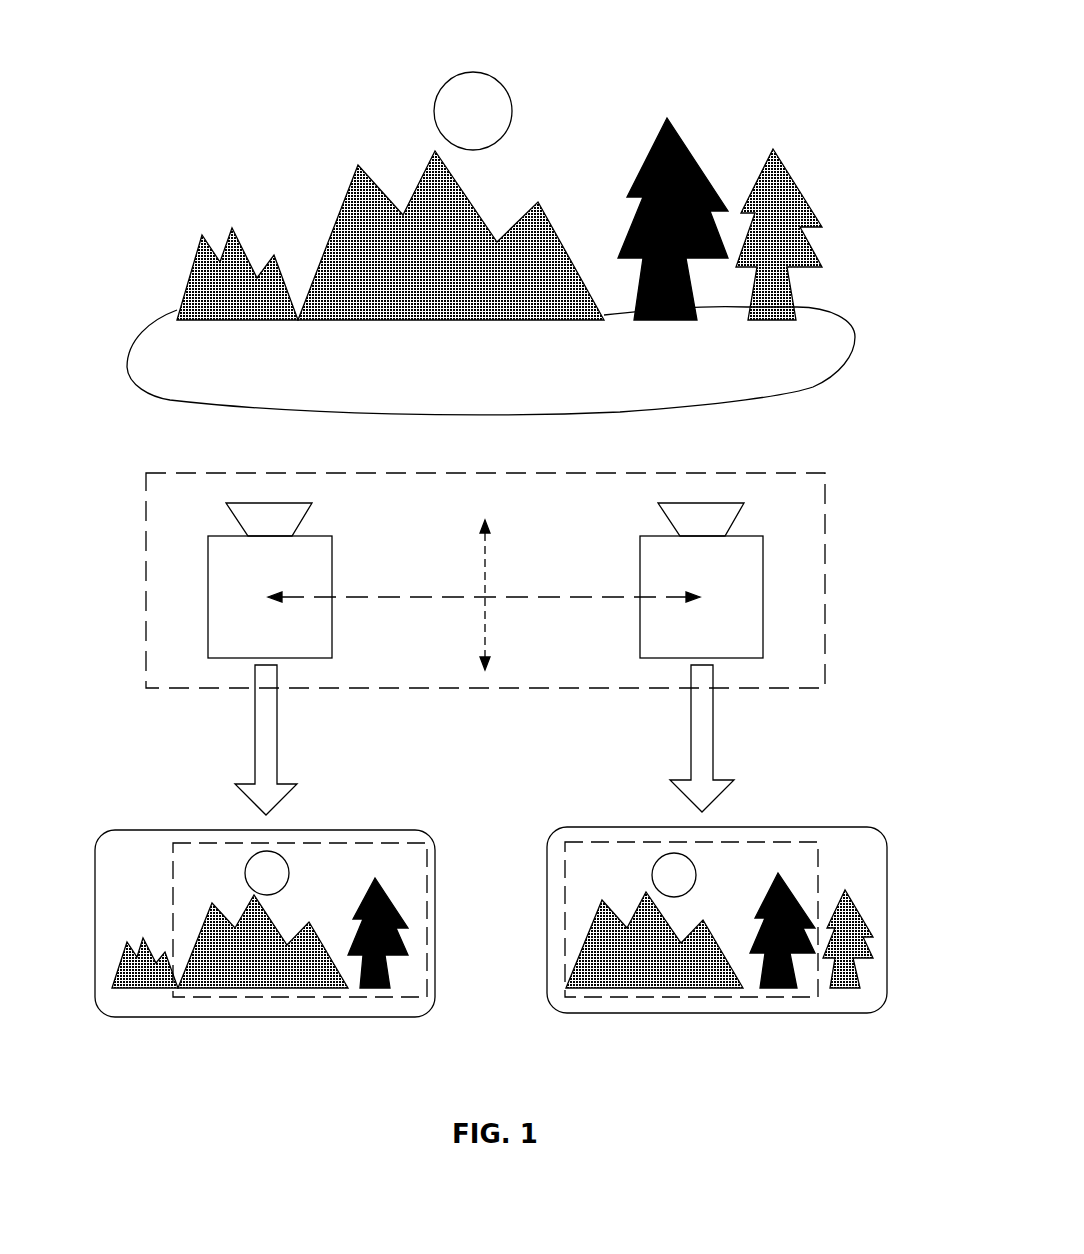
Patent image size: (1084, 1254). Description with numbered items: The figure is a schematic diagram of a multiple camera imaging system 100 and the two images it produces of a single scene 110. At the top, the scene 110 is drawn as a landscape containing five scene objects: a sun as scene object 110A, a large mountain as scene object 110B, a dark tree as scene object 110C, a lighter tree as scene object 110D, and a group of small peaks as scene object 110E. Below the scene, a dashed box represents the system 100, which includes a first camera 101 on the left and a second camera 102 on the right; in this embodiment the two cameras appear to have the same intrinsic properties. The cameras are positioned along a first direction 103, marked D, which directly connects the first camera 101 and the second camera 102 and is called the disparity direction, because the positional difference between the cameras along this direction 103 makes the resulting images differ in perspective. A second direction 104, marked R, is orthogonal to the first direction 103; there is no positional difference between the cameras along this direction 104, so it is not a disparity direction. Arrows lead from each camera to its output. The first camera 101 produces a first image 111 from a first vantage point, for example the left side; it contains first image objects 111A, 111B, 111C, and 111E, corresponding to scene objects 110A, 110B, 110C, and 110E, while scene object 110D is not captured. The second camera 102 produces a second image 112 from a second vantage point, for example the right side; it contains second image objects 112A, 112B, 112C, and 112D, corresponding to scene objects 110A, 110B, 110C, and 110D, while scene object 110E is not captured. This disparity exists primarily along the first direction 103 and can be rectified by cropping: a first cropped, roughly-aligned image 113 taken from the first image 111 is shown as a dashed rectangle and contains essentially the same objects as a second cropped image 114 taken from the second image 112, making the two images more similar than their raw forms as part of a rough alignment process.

The multiple camera imaging system 100 is at (825, 493).
The first camera 101 is at (312, 640).
The second camera 102 is at (745, 640).
The first direction 103 is at (530, 597).
The second direction 104 is at (485, 618).
The scene 110 is at (764, 109).
The scene object 110A is at (436, 93).
The scene object 110B is at (413, 183).
The scene object 110C is at (650, 147).
The scene object 110D is at (817, 215).
The scene object 110E is at (227, 237).
The first image 111 is at (362, 830).
The first image object 111A is at (248, 868).
The first image object 111B is at (202, 922).
The first image object 111C is at (390, 975).
The first image object 111E is at (122, 957).
The first cropped image 113 is at (305, 1000).
The second image 112 is at (820, 827).
The second image object 112A is at (655, 862).
The second image object 112B is at (638, 907).
The second image object 112C is at (795, 975).
The second image object 112D is at (852, 907).
The second cropped image 114 is at (737, 998).